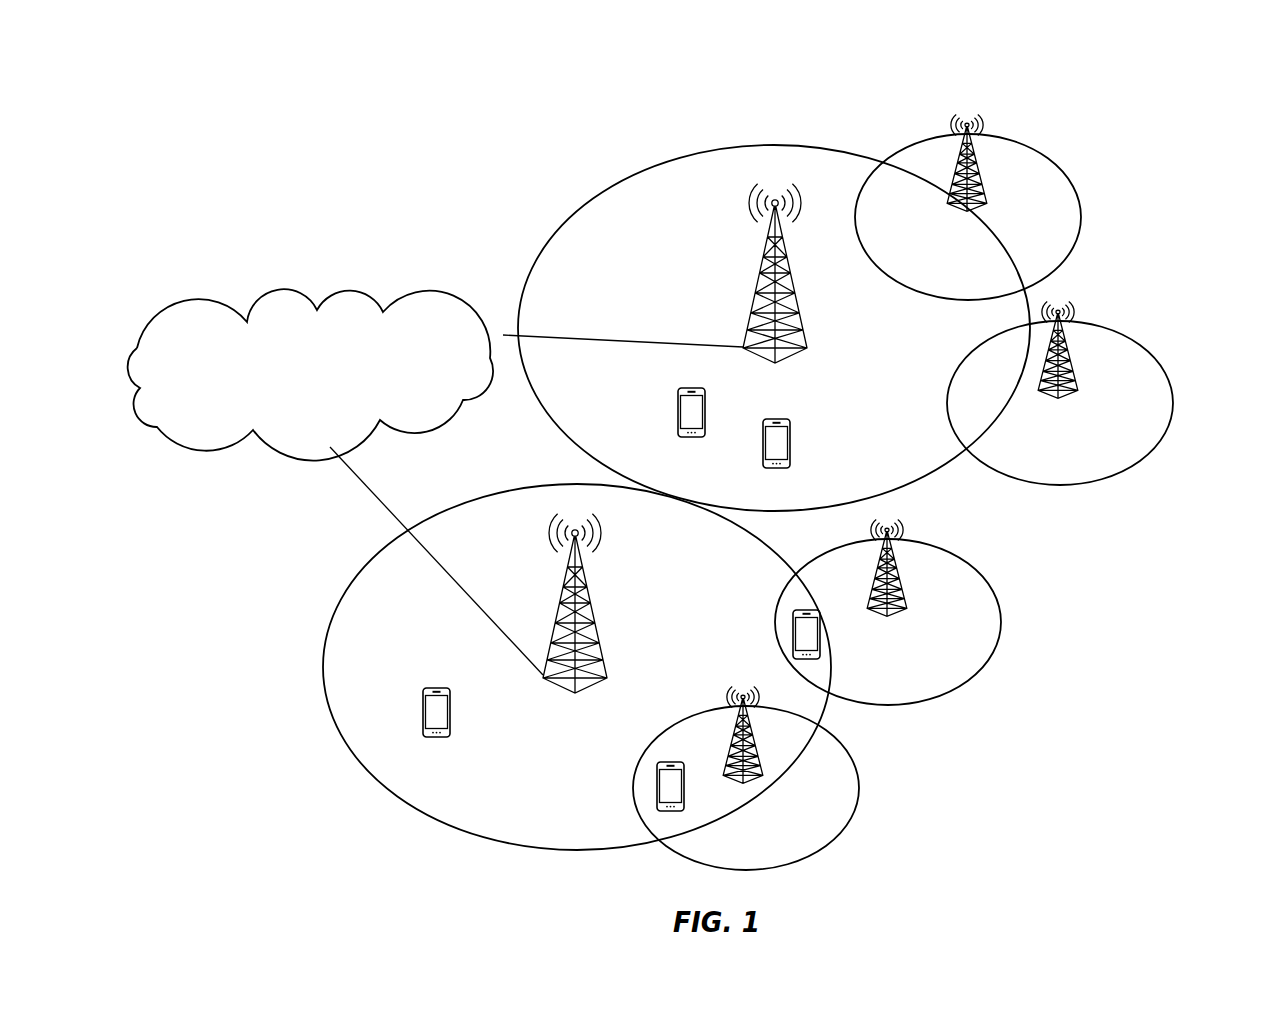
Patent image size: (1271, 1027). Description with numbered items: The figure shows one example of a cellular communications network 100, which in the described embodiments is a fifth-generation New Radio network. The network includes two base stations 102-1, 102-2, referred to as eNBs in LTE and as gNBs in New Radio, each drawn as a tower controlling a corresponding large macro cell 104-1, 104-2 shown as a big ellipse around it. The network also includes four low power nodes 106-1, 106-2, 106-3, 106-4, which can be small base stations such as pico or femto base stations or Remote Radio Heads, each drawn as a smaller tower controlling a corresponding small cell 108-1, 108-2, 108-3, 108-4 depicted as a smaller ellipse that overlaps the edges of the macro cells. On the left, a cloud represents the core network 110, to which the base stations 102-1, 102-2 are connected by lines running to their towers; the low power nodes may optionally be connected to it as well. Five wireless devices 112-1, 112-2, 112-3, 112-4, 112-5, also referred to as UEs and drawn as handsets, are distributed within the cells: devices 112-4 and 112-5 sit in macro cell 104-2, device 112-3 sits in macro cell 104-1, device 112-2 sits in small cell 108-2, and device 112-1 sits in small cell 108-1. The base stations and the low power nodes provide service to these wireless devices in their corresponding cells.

The cellular communications network 100 is at (1152, 103).
The core network 110 is at (323, 415).
The base station 102-1 is at (593, 627).
The base station 102-2 is at (788, 295).
The macro cell 104-1 is at (438, 818).
The macro cell 104-2 is at (778, 142).
The low power node 106-1 is at (760, 767).
The low power node 106-2 is at (903, 600).
The low power node 106-3 is at (1073, 390).
The low power node 106-4 is at (983, 197).
The small cell 108-1 is at (858, 793).
The small cell 108-2 is at (1000, 635).
The small cell 108-3 is at (1172, 413).
The small cell 108-4 is at (1080, 210).
The wireless device 112-1 is at (698, 740).
The wireless device 112-2 is at (820, 610).
The wireless device 112-3 is at (450, 708).
The wireless device 112-4 is at (707, 420).
The wireless device 112-5 is at (792, 442).